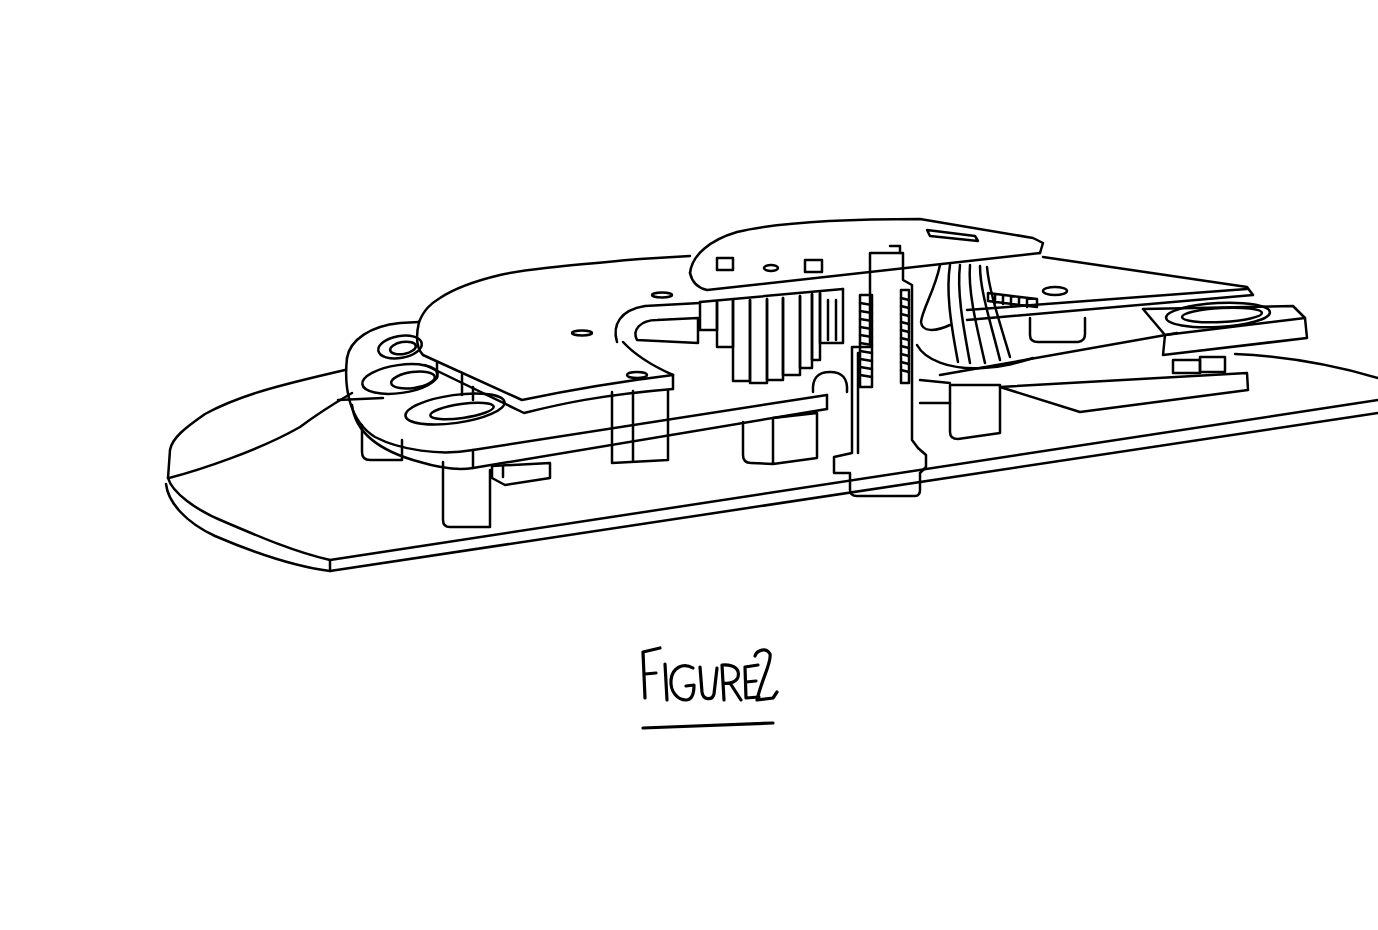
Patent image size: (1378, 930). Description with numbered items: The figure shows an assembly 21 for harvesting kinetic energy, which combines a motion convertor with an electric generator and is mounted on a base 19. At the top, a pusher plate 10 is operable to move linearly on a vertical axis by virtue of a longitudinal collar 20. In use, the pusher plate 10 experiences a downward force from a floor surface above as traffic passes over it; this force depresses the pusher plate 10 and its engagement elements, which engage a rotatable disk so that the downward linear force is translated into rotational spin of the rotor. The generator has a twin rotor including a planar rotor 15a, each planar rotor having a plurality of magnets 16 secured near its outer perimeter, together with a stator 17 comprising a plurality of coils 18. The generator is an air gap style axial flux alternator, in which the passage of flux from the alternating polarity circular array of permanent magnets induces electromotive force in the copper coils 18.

The pusher plate 10 is at (820, 225).
The planar rotor 15a is at (565, 272).
The magnets 16 is at (528, 480).
The stator 17 is at (377, 340).
The coils 18 is at (170, 474).
The base 19 is at (281, 391).
The collar 20 is at (905, 247).
The assembly 21 is at (1301, 231).